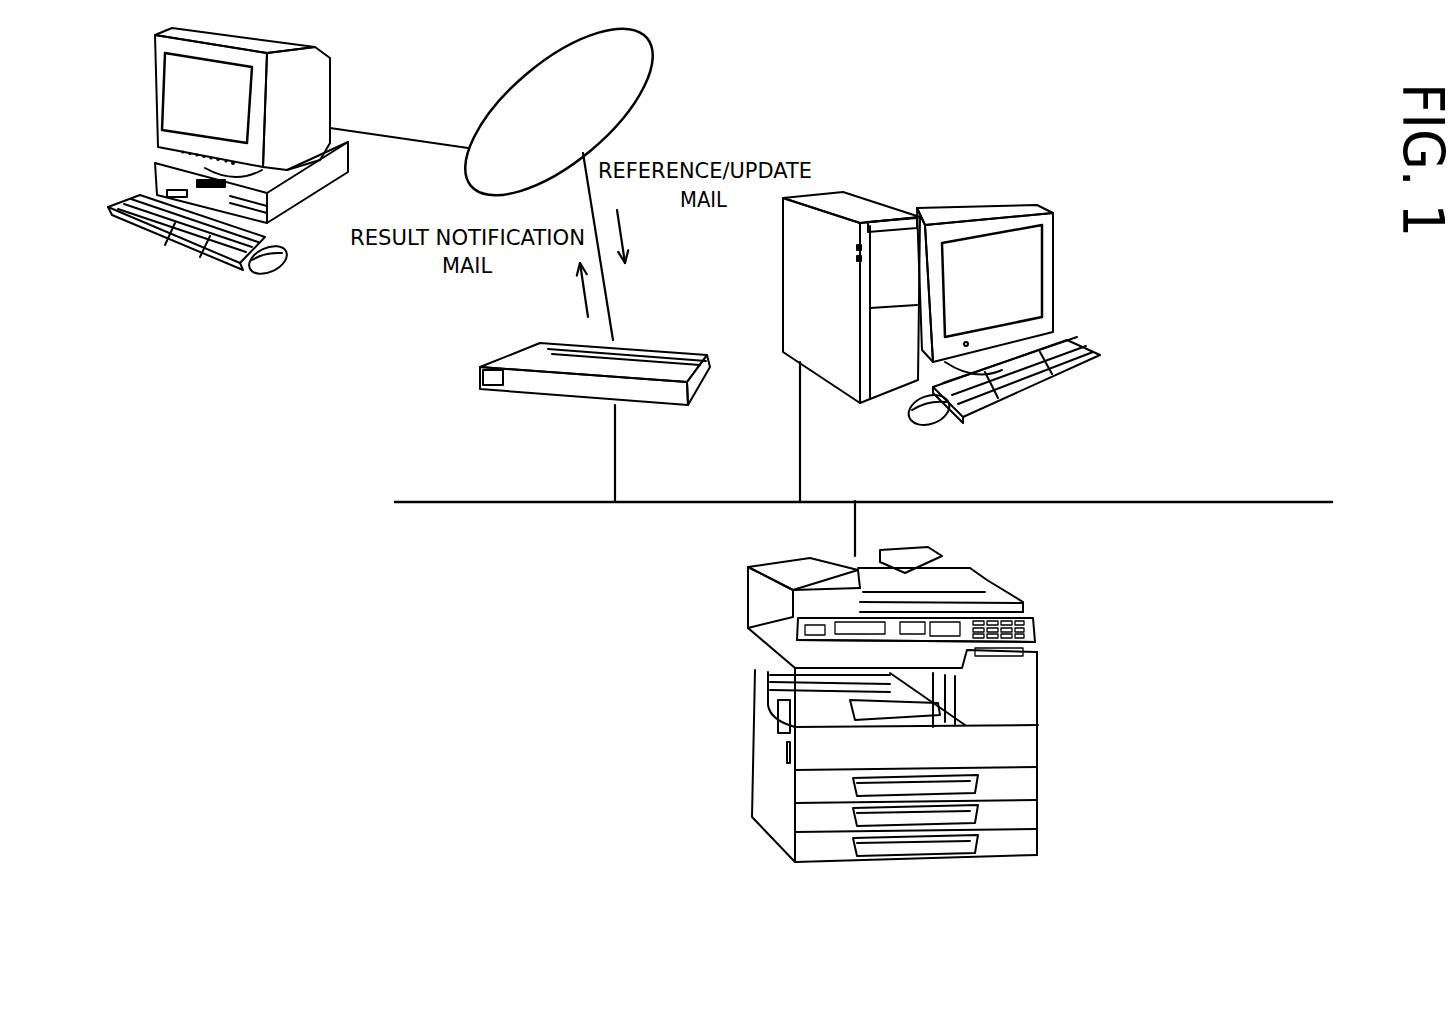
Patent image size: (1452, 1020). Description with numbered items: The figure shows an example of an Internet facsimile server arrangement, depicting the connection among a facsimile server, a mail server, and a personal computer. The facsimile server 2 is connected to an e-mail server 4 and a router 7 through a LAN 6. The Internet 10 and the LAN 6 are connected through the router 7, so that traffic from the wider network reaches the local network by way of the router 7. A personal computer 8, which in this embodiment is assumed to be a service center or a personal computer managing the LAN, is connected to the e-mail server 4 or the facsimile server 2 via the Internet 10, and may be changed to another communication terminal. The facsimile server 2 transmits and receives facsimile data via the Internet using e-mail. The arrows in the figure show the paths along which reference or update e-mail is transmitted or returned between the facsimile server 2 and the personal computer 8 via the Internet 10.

The facsimile server 2 is at (791, 704).
The e-mail server 4 is at (941, 328).
The LAN 6 is at (863, 485).
The router 7 is at (595, 388).
The personal computer 8 is at (228, 160).
The Internet 10 is at (633, 78).